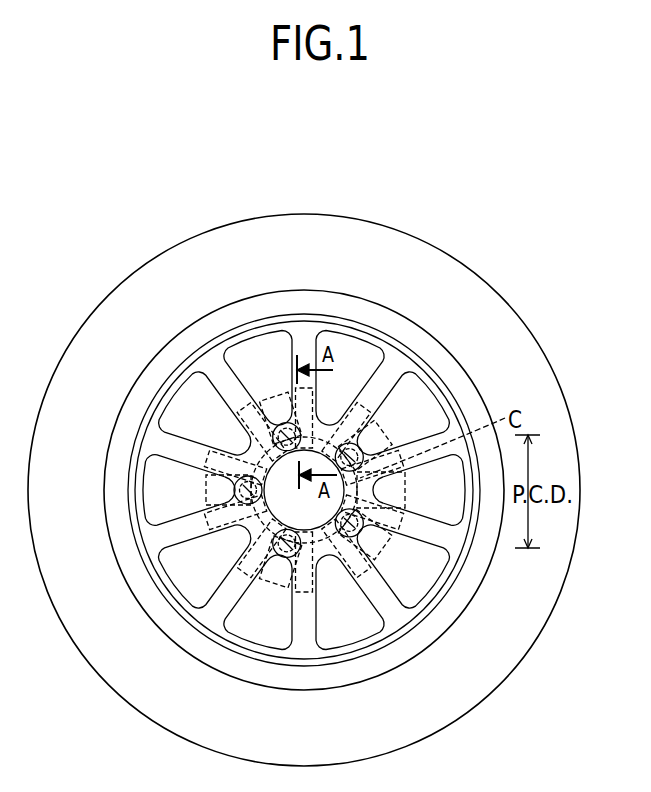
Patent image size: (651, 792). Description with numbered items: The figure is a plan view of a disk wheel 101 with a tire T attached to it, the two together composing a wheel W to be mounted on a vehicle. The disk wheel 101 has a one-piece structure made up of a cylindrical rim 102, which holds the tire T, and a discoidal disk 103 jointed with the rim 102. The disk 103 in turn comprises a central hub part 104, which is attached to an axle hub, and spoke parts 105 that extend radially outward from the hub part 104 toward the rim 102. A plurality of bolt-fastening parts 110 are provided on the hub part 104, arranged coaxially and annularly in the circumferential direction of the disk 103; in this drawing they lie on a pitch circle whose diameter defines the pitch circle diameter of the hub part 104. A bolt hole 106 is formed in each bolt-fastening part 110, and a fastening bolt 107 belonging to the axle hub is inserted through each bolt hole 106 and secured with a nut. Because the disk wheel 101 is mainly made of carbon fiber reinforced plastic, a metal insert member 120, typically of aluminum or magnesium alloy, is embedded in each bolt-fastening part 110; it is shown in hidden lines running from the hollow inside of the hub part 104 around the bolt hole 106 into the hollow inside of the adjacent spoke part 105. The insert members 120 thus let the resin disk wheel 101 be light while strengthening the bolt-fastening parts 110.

The disk wheel 101 is at (293, 265).
The rim 102 is at (223, 306).
The disk 103 is at (267, 321).
The hub part 104 is at (252, 532).
The spoke parts 105 is at (365, 428).
The bolt hole 106 is at (274, 440).
The fastening bolt 107 is at (235, 485).
The bolt-fastening part 110 is at (243, 433).
The insert member 120 is at (263, 433).
The wheel W is at (473, 270).
The tire T is at (553, 380).